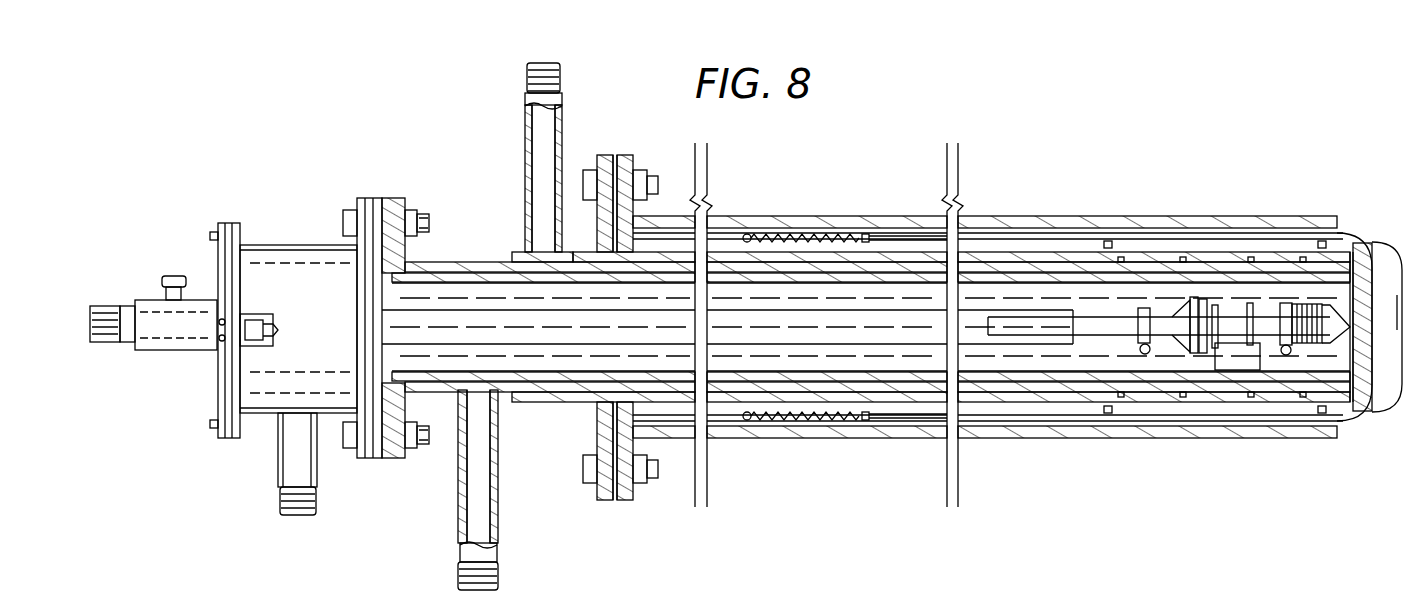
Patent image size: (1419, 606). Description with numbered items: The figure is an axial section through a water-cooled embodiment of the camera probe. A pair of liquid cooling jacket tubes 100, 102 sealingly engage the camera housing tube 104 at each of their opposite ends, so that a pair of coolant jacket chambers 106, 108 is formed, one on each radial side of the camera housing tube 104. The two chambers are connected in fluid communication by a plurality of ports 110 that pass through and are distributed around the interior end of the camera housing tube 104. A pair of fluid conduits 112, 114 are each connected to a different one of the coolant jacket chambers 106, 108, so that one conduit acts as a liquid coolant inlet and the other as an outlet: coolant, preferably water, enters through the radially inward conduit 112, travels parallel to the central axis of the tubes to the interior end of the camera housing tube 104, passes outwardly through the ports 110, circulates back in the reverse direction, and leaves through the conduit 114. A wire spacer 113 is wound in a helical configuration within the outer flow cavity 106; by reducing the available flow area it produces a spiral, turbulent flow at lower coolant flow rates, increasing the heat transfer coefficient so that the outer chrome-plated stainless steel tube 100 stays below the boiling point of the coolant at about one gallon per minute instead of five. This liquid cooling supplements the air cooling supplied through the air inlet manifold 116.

The liquid cooling jacket tube 100 is at (1135, 250).
The liquid cooling jacket tube 102 is at (550, 367).
The camera housing tube 104 is at (903, 266).
The coolant jacket chamber 106 is at (1007, 258).
The coolant jacket chamber 108 is at (1082, 268).
The ports 110 is at (1236, 260).
The fluid conduit 112 is at (462, 500).
The wire spacer 113 is at (1280, 386).
The fluid conduit 114 is at (525, 138).
The air inlet manifold 116 is at (298, 244).